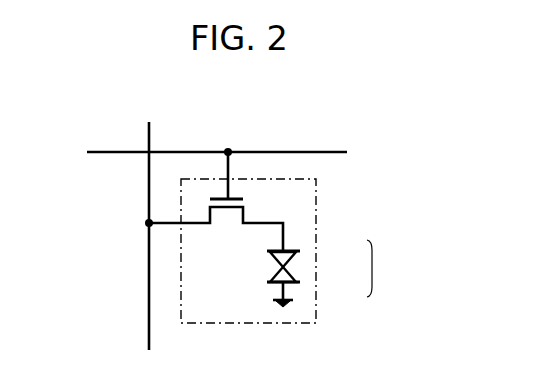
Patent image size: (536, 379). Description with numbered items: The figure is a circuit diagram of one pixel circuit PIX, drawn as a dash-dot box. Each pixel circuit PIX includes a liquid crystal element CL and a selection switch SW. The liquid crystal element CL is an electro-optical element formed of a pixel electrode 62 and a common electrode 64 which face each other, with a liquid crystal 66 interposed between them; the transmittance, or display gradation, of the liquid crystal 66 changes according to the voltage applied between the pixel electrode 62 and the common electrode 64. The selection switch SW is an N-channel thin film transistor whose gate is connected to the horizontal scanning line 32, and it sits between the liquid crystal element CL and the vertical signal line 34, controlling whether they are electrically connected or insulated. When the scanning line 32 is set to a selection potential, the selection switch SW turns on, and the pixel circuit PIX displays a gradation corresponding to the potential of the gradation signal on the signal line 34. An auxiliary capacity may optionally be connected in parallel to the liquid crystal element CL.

The scanning line 32 is at (107, 153).
The signal line 34 is at (148, 273).
The selection switch SW is at (228, 209).
The pixel circuit PIX is at (317, 203).
The pixel electrode 62 is at (299, 250).
The liquid crystal 66 is at (293, 263).
The common electrode 64 is at (299, 283).
The liquid crystal element CL is at (385, 268).